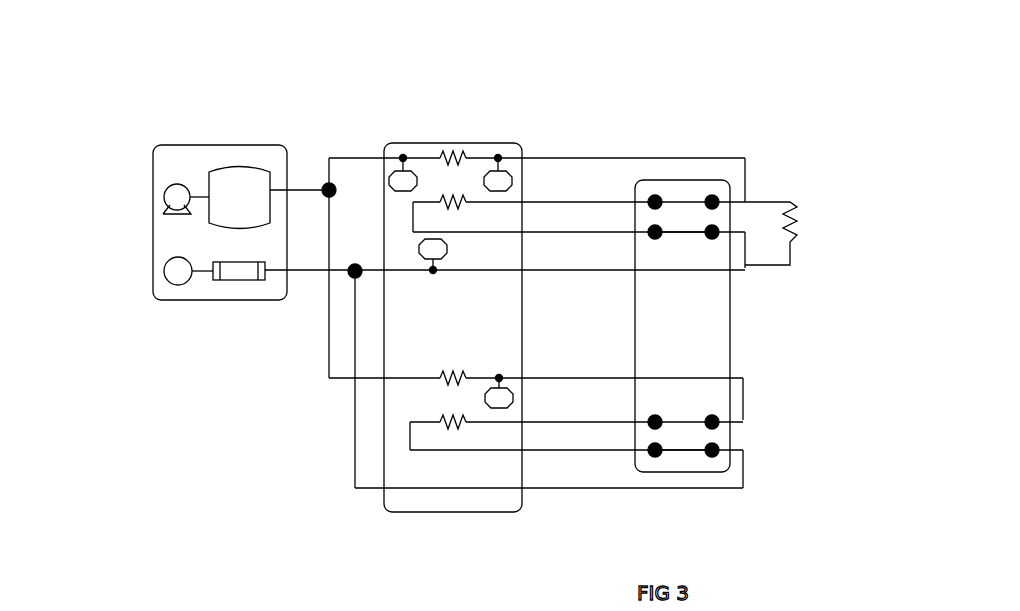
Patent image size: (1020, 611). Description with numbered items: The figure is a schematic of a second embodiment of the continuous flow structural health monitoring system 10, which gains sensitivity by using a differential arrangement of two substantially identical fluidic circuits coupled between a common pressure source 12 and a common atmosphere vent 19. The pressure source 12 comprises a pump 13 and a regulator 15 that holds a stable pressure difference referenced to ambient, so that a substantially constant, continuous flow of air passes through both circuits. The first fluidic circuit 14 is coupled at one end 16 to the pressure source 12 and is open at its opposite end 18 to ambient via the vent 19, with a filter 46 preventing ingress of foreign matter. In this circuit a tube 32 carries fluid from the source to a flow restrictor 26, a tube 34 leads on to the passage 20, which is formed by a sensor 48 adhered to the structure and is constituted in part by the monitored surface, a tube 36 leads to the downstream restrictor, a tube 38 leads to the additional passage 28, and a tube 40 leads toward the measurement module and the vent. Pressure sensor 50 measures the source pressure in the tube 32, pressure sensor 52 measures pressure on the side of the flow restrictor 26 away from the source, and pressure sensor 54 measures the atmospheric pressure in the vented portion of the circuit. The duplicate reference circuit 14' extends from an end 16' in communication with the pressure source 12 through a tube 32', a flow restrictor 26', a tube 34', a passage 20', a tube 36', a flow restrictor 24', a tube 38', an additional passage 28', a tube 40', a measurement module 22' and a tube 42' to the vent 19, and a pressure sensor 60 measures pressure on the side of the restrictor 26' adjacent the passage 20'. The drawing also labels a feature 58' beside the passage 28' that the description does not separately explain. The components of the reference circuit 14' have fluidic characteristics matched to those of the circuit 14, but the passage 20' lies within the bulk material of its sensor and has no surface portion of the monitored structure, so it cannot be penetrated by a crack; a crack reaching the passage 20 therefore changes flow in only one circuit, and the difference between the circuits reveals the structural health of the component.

The continuous flow structural health monitoring system 10 is at (108, 113).
The pressure source 12 is at (282, 139).
The pump 13 is at (165, 196).
The regulator 15 is at (238, 180).
The atmosphere vent 19 is at (165, 271).
The filter 46 is at (237, 283).
The end of fluidic circuit 16 is at (322, 133).
The end of reference circuit 16' is at (268, 284).
The opposite end of fluidic circuit 18 is at (312, 319).
The tube 32 is at (372, 99).
The tube 32' is at (336, 406).
The measurement module 22' is at (499, 286).
The tube 34 is at (564, 114).
The tube 34' is at (563, 346).
The flow restrictor 26 is at (471, 118).
The flow restrictor 26' is at (502, 338).
The pressure sensor 50 is at (399, 155).
The pressure sensor 52 is at (512, 155).
The pressure sensor 54 is at (426, 260).
The pressure sensor 60 is at (499, 408).
The tube 36 is at (579, 121).
The tube 36' is at (576, 419).
The tube 38 is at (579, 131).
The tube 38' is at (576, 493).
The tube 40 is at (591, 297).
The tube 40' is at (576, 509).
The tube 42' is at (320, 433).
The flow restrictor 24' is at (372, 480).
The fluidic circuit 14 is at (792, 184).
The reference fluidic circuit 14' is at (405, 467).
The sensor 48 is at (712, 180).
The passage 20 is at (695, 151).
The passage 20' is at (683, 385).
The additional passage 28 is at (736, 197).
The additional passage 28' is at (702, 488).
The auxiliary heater 58' is at (798, 233).